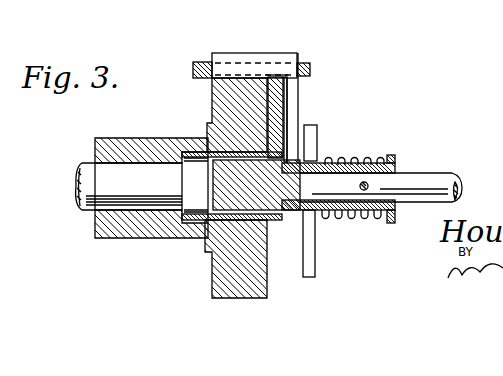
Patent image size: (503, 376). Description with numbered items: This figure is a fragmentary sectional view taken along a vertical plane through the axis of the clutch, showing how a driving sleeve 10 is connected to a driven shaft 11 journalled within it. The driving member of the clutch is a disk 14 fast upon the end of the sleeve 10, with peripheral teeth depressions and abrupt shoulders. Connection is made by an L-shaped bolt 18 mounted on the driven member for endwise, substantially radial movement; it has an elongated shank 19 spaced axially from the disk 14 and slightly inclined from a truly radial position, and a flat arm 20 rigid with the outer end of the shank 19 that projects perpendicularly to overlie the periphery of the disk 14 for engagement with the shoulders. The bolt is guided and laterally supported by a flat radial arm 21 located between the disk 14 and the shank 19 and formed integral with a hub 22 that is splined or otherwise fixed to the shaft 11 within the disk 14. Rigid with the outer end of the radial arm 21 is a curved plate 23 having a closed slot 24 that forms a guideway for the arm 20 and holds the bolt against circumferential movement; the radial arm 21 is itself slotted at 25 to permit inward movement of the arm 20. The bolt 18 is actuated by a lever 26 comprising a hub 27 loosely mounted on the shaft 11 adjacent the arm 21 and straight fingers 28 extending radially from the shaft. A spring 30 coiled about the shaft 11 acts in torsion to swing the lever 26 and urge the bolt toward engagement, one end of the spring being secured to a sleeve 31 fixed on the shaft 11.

The sleeve 10 is at (133, 145).
The driven shaft 11 is at (432, 180).
The disk 14 is at (222, 98).
The L-shaped bolt 18 is at (262, 58).
The shank 19 is at (292, 108).
The arm 20 is at (224, 53).
The radial arm 21 is at (288, 94).
The hub 22 is at (264, 228).
The curved plate 23 is at (193, 66).
The closed slot 24 is at (304, 64).
The slot 25 is at (281, 78).
The lever 26 is at (325, 155).
The hub 27 is at (323, 217).
The fingers 28 is at (316, 257).
The spring 30 is at (372, 156).
The sleeve 31 is at (395, 166).